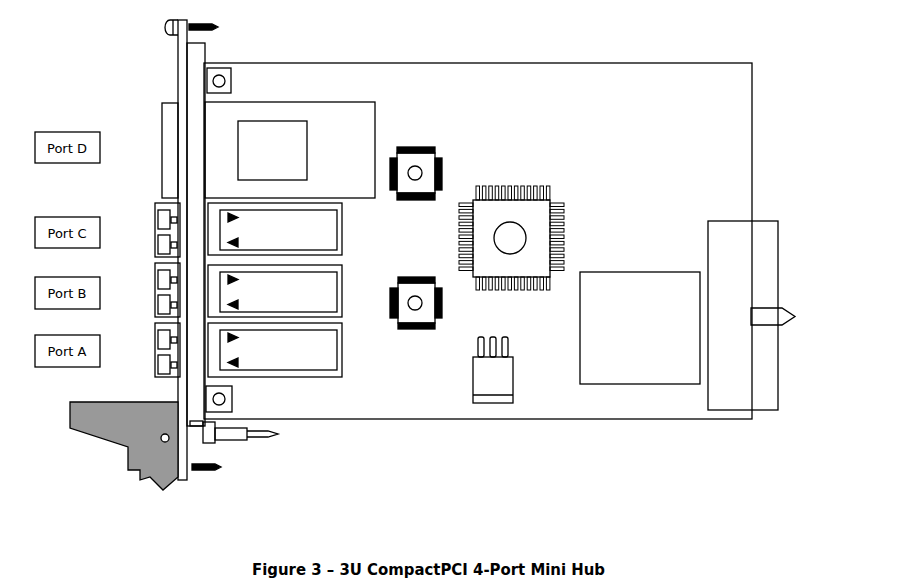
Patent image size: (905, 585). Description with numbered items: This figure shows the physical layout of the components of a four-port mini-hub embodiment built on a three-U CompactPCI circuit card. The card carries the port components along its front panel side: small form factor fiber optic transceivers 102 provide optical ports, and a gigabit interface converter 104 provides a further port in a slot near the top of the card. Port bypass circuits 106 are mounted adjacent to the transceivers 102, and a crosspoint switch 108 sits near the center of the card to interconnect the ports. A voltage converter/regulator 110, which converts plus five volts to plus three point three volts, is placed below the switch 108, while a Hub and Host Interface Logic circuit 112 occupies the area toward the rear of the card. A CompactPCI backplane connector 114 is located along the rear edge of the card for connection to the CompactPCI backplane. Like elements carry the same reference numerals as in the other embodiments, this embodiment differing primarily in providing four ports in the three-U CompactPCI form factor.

The small form factor fiber optic transceivers 102 is at (289, 290).
The gigabit interface converter 104 is at (331, 137).
The port bypass circuits 106 is at (435, 250).
The crosspoint switch 108 is at (548, 221).
The voltage converter/regulator 110 is at (464, 405).
The Hub and Host Interface Logic circuit 112 is at (633, 377).
The CompactPCI backplane connector 114 is at (779, 260).